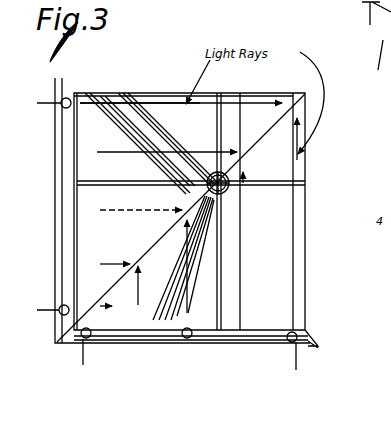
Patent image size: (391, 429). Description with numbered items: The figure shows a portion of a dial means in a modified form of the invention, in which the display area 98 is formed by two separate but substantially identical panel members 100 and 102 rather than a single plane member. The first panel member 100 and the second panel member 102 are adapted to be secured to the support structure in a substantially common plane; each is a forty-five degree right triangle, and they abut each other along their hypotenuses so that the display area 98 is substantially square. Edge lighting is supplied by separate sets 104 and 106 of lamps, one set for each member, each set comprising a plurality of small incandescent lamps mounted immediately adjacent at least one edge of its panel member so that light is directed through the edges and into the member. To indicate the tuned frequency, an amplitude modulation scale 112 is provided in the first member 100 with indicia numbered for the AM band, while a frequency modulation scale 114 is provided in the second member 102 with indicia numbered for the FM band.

The display area 98 is at (268, 266).
The first panel member 100 is at (298, 207).
The second panel member 102 is at (240, 100).
The set of lamps 104 is at (310, 345).
The set of lamps 106 is at (66, 109).
The amplitude modulation scale 112 is at (290, 322).
The frequency modulation scale 114 is at (87, 122).